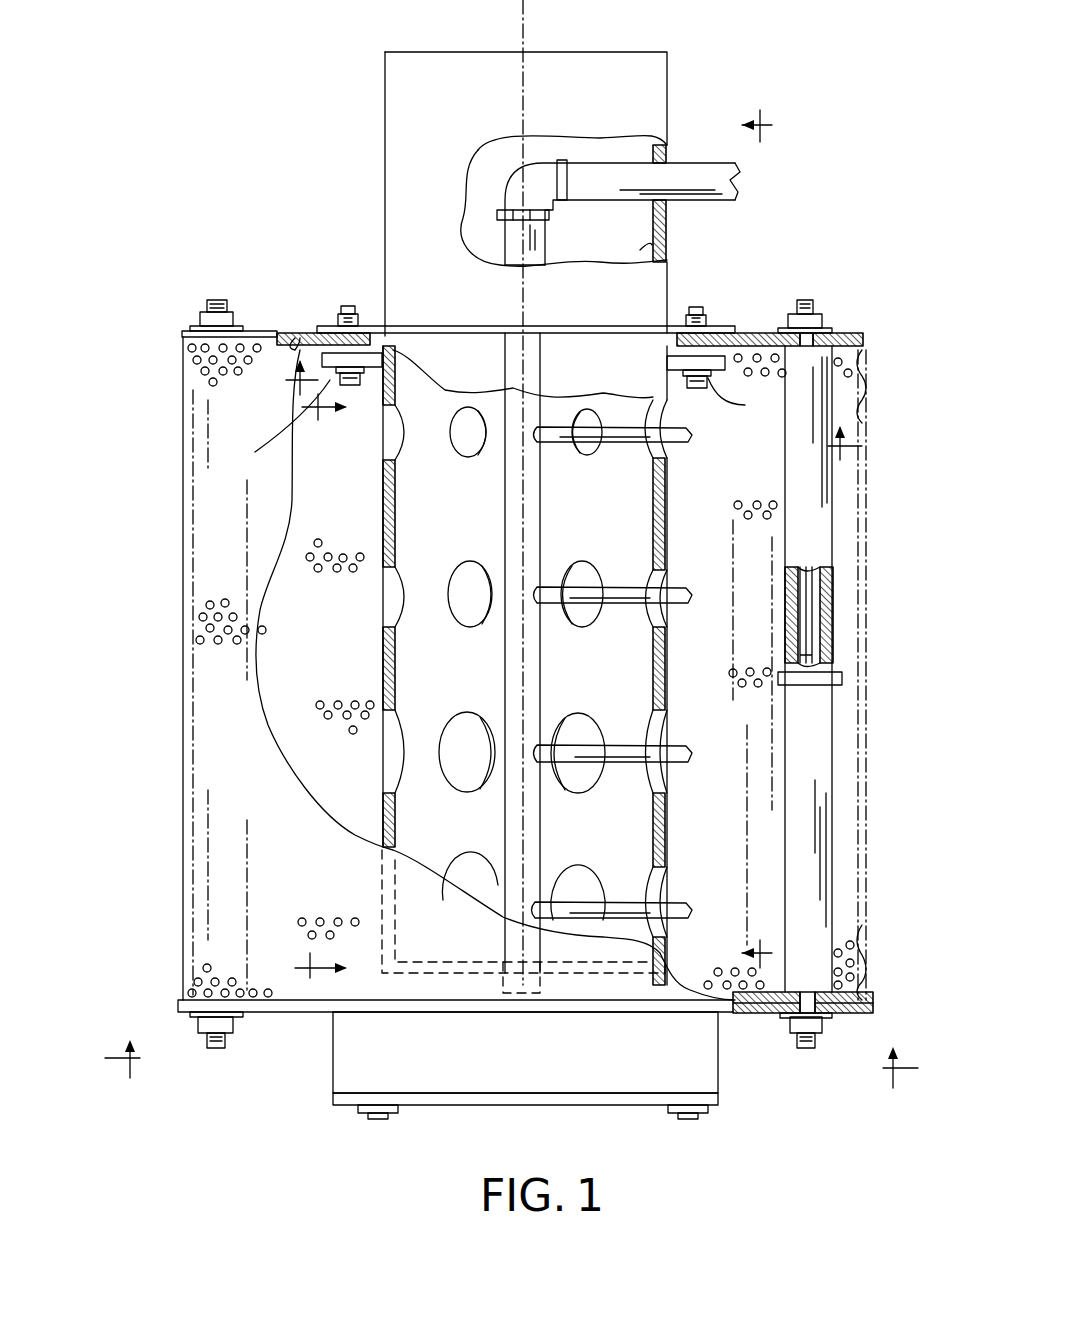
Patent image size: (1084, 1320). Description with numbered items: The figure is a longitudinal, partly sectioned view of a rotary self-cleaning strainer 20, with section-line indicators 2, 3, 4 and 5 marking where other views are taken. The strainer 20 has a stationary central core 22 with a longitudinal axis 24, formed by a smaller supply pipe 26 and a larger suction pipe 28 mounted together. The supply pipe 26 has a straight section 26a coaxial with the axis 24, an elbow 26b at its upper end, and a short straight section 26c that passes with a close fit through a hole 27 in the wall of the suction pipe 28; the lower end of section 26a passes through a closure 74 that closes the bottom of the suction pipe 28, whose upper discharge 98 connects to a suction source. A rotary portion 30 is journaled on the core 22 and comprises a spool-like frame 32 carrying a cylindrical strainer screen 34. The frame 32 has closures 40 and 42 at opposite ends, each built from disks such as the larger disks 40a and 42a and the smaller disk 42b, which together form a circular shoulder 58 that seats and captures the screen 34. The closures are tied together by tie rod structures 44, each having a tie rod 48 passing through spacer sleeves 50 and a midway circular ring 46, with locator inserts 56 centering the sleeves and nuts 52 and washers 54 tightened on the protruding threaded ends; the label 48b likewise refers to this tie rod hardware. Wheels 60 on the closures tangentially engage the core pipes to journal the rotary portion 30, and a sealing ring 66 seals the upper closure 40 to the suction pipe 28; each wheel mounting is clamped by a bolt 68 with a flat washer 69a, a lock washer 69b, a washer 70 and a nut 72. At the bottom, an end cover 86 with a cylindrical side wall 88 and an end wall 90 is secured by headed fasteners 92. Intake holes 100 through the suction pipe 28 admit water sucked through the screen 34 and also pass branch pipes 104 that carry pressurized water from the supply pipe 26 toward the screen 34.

The rotary self-cleaning strainer 20 is at (280, 215).
The central core 22 is at (668, 52).
The longitudinal axis 24 is at (540, 0).
The supply pipe 26 is at (497, 233).
The straight section 26a is at (500, 655).
The elbow 26b is at (522, 165).
The short straight section 26c is at (603, 193).
The hole 27 is at (670, 160).
The suction pipe 28 is at (385, 160).
The rotary portion 30 is at (183, 343).
The spool-like frame 32 is at (862, 333).
The strainer screen 34 is at (205, 862).
The closure 40 is at (300, 335).
The circular disk 40a is at (757, 333).
The closure 42 is at (268, 1012).
The circular disk 42a is at (178, 1006).
The circular disk 42b is at (745, 1013).
The tie rod structure 44 is at (217, 300).
The circular ring 46 is at (842, 678).
The tie rod 48 is at (213, 300).
The bolt 48b is at (320, 333).
The spacer sleeve 50 is at (833, 612).
The nut 52 is at (822, 320).
The washer 54 is at (190, 328).
The locator insert 56 is at (785, 640).
The circular shoulder 58 is at (295, 343).
The wheel 60 is at (755, 395).
The sealing ring 66 is at (652, 245).
The bolt 68 is at (352, 385).
The flat washer 69a is at (382, 358).
The lock washer 69b is at (364, 378).
The washer 70 is at (385, 328).
The nut 72 is at (358, 300).
The closure 74 is at (575, 975).
The bottom end cover 86 is at (333, 1105).
The side wall 88 is at (338, 1062).
The end wall 90 is at (505, 1105).
The headed fastener 92 is at (380, 1119).
The discharge 98 is at (448, 52).
The hole 100 is at (462, 440).
The branch pipe 104 is at (620, 440).
The section line 2 is at (509, 1068).
The section line 3 is at (321, 694).
The section line 4 is at (572, 414).
The section line 5 is at (760, 533).